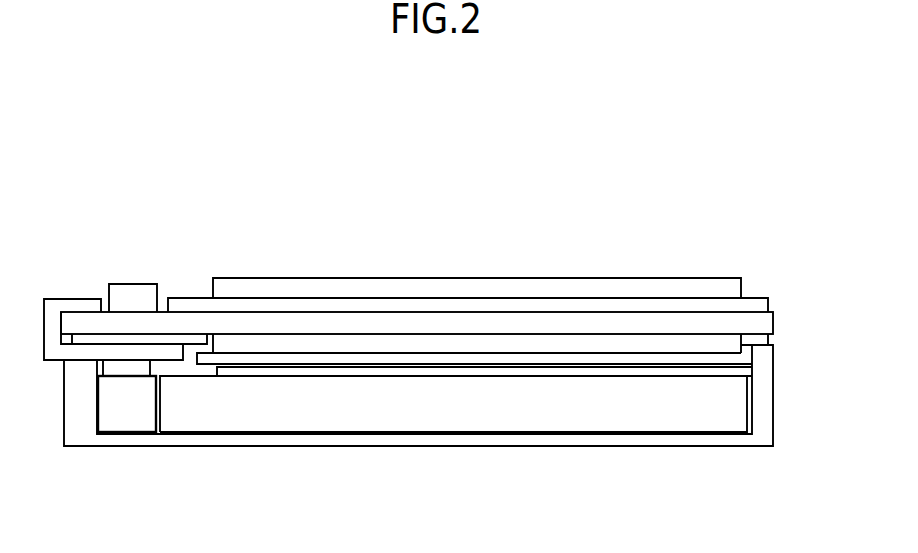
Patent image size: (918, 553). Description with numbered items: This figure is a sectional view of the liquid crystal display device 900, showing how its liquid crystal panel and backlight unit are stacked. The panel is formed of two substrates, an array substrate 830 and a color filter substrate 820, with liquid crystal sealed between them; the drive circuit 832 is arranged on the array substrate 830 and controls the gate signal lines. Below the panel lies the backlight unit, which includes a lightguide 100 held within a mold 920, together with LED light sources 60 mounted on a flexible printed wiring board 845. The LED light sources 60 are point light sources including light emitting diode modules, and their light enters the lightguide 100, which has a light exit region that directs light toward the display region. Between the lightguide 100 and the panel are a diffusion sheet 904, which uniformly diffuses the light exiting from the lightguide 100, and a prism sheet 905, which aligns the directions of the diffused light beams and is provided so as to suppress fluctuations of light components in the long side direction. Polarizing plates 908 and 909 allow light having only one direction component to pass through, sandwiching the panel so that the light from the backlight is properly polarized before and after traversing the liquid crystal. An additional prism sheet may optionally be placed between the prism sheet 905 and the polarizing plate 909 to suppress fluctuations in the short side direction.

The liquid crystal display device 900 is at (470, 145).
The flexible printed wiring board 845 is at (73, 303).
The drive circuit 832 is at (135, 298).
The color filter substrate 820 is at (194, 303).
The array substrate 830 is at (416, 327).
The polarizing plate 908 is at (584, 288).
The polarizing plate 909 is at (672, 345).
The prism sheet 905 is at (742, 355).
The diffusion sheet 904 is at (742, 370).
The mold 920 is at (625, 440).
The lightguide 100 is at (668, 408).
The LED light sources 60 is at (128, 413).